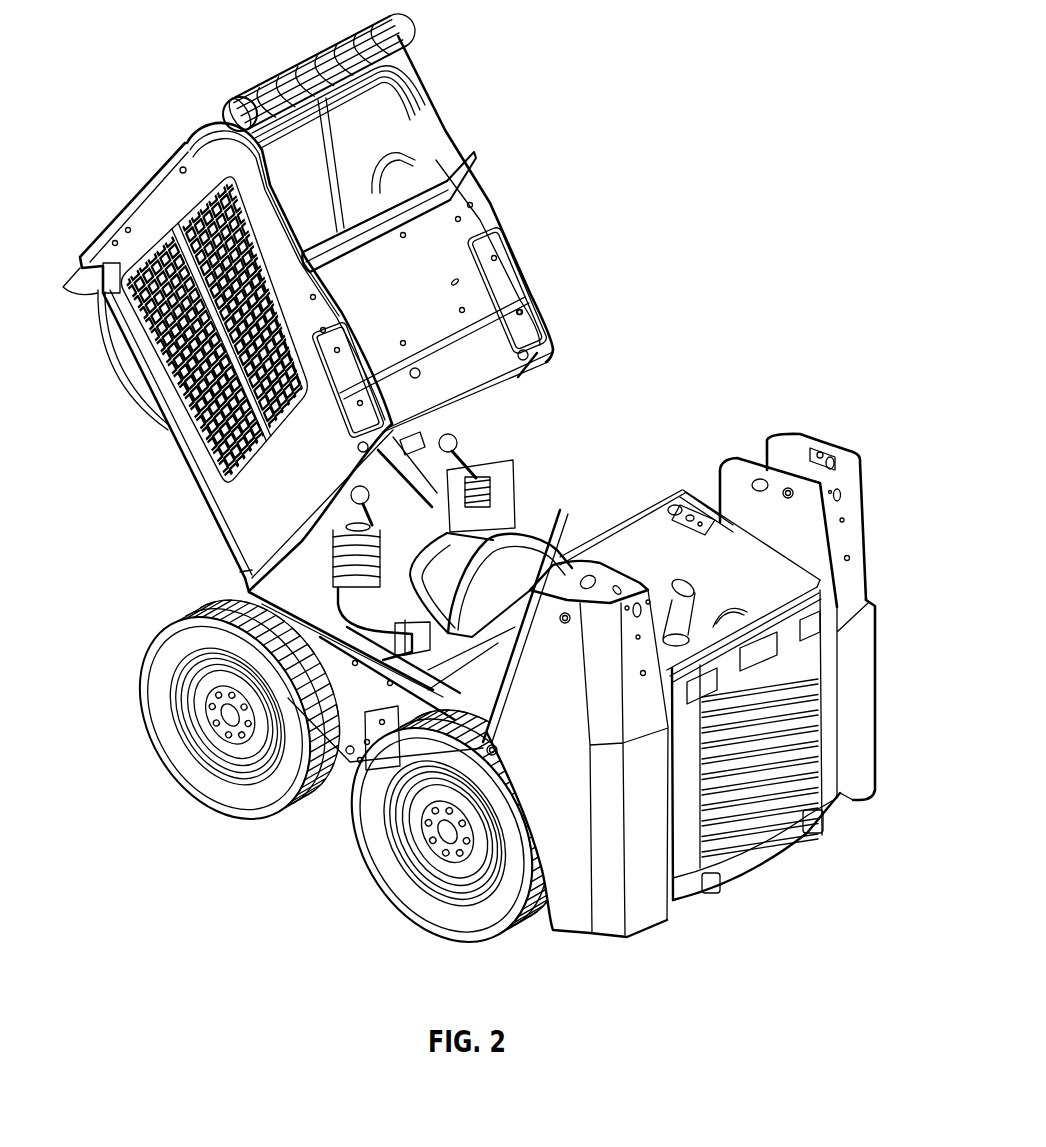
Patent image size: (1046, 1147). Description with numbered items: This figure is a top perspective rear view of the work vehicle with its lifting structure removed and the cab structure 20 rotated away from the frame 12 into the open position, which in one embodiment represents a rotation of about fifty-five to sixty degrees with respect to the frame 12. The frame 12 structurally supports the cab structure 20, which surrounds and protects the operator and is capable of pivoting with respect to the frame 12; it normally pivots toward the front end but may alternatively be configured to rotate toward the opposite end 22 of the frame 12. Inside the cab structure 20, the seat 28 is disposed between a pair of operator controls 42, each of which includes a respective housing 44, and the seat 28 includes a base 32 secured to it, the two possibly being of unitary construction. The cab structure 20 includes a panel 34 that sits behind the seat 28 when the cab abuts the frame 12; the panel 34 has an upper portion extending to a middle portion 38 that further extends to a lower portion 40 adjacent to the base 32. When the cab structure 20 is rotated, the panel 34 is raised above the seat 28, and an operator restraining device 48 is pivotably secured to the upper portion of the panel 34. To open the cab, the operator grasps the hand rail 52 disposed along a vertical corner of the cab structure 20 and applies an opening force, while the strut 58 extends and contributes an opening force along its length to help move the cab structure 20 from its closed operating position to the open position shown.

The frame 12 is at (348, 758).
The cab structure 20 is at (139, 193).
The opposite end 22 is at (857, 672).
The seat 28 is at (540, 512).
The base 32 is at (452, 672).
The panel 34 is at (398, 294).
The middle portion 38 is at (435, 253).
The lower portion 40 is at (478, 360).
The operator controls 42 is at (350, 495).
The housing 44 is at (243, 572).
The operator restraining device 48 is at (400, 140).
The hand rail 52 is at (120, 370).
The strut 58 is at (418, 443).